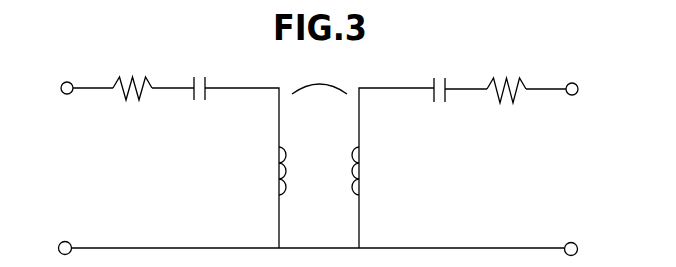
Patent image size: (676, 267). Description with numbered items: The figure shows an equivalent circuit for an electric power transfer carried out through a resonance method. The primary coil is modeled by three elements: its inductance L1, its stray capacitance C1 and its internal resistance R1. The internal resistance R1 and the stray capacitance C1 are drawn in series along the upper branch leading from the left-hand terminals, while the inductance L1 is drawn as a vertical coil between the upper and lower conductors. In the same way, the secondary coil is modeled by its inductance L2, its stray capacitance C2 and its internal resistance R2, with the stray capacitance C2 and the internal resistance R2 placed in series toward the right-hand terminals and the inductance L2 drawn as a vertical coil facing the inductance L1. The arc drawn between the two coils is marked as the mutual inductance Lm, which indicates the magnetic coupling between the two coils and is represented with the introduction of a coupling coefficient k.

The internal resistance of the primary coil R1 is at (132, 75).
The stray capacitance of the primary coil C1 is at (201, 75).
The mutual inductance Lm is at (319, 76).
The stray capacitance of the secondary coil C2 is at (440, 77).
The internal resistance of the secondary coil R2 is at (506, 77).
The inductance of the primary coil L1 is at (267, 171).
The inductance of the secondary coil L2 is at (369, 171).